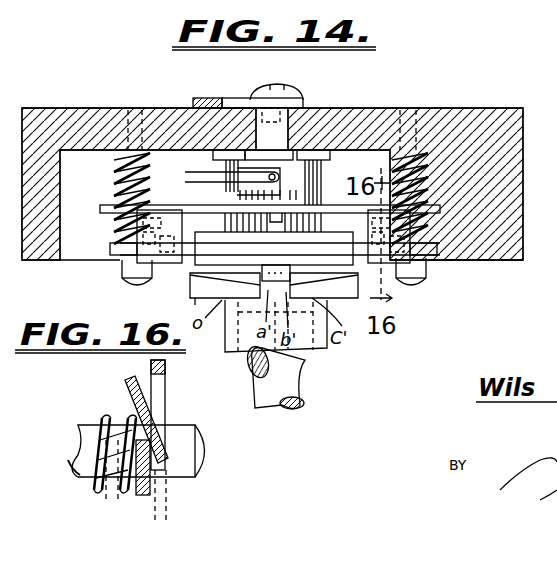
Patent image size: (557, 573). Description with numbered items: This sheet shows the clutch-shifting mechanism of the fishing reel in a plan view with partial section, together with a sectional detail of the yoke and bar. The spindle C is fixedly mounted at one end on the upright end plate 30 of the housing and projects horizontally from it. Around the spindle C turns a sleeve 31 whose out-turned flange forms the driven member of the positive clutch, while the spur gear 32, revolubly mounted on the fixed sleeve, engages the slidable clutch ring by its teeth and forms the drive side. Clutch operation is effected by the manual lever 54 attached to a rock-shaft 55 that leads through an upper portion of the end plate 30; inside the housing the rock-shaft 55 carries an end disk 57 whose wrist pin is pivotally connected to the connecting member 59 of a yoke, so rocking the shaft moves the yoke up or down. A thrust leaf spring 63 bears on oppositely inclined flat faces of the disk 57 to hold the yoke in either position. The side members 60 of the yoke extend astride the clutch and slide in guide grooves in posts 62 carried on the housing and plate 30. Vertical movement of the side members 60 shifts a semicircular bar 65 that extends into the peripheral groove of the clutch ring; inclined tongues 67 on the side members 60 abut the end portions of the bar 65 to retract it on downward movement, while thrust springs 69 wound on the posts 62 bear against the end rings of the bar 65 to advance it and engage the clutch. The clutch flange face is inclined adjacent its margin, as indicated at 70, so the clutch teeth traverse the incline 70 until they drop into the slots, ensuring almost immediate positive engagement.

In FIG. 14, the end plate 30 is at (103, 116).
In FIG. 14, the lever 54 is at (198, 98).
In FIG. 14, the rock-shaft 55 is at (258, 122).
In FIG. 14, the end disk 57 is at (228, 170).
In FIG. 14, the spur gear 32 is at (322, 176).
In FIG. 14, the thrust leaf spring 63 is at (208, 178).
In FIG. 14, the connecting member 59 is at (135, 208).
In FIG. 14, the thrust springs 69 is at (115, 176).
In FIG. 16, the thrust springs 69 is at (98, 425).
In FIG. 14, the semicircular bar 65 is at (118, 246).
In FIG. 16, the semicircular bar 65 is at (136, 497).
In FIG. 14, the posts 62 is at (122, 268).
In FIG. 16, the posts 62 is at (207, 444).
In FIG. 14, the incline 70 is at (192, 288).
In FIG. 14, the sleeve 31 is at (326, 345).
In FIG. 14, the spindle C is at (288, 385).
In FIG. 16, the side members 60 is at (165, 370).
In FIG. 16, the inclined tongues 67 is at (125, 383).